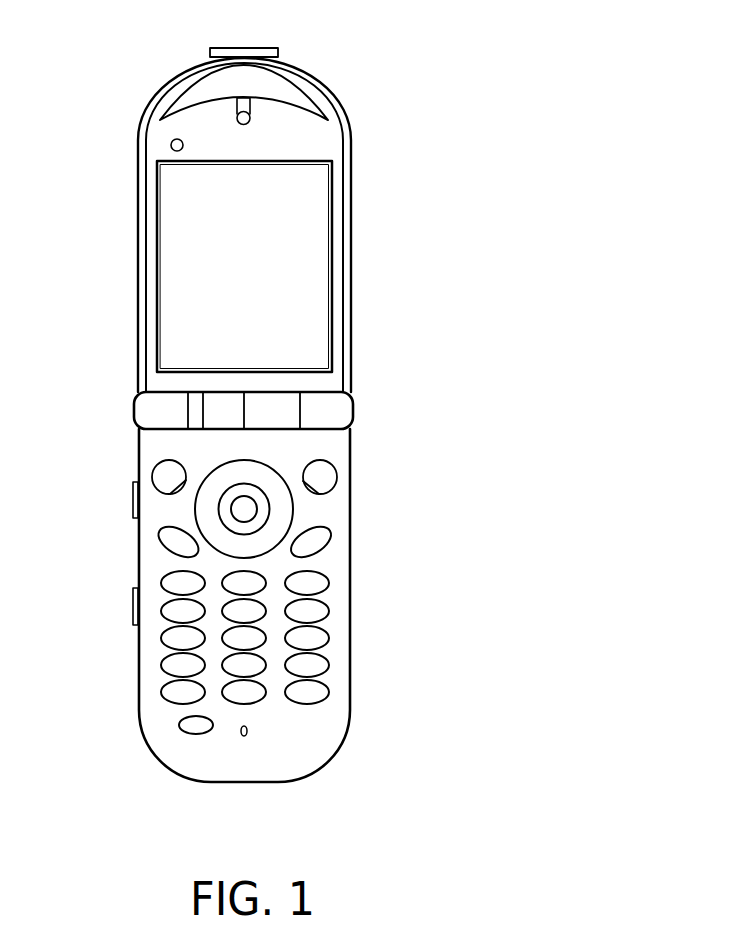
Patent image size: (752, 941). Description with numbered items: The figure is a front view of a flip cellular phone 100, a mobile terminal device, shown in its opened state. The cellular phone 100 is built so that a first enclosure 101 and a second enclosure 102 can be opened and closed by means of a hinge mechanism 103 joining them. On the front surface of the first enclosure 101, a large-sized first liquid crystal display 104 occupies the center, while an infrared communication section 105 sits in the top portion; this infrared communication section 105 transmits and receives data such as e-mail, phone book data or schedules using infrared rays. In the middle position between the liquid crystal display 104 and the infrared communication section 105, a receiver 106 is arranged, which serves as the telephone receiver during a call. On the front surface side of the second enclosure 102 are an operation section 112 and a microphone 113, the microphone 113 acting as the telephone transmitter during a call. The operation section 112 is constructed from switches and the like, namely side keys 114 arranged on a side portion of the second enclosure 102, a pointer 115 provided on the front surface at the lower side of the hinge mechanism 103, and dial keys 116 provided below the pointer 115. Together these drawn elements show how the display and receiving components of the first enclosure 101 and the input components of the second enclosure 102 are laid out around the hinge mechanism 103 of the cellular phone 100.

The cellular phone 100 is at (352, 52).
The first enclosure 101 is at (352, 205).
The second enclosure 102 is at (138, 454).
The hinge mechanism 103 is at (353, 407).
The first liquid crystal display 104 is at (168, 245).
The infrared communication section 105 is at (250, 47).
The receiver 106 is at (250, 122).
The operation section 112 is at (245, 597).
The microphone 113 is at (248, 733).
The side keys 114 is at (132, 503).
The pointer 115 is at (247, 508).
The dial keys 116 is at (172, 662).